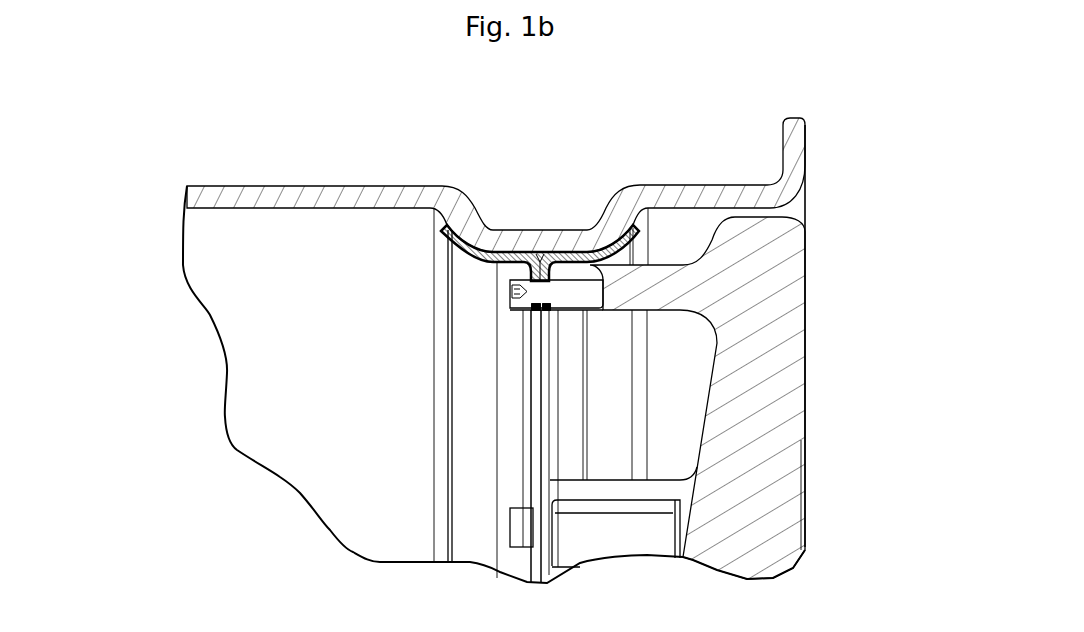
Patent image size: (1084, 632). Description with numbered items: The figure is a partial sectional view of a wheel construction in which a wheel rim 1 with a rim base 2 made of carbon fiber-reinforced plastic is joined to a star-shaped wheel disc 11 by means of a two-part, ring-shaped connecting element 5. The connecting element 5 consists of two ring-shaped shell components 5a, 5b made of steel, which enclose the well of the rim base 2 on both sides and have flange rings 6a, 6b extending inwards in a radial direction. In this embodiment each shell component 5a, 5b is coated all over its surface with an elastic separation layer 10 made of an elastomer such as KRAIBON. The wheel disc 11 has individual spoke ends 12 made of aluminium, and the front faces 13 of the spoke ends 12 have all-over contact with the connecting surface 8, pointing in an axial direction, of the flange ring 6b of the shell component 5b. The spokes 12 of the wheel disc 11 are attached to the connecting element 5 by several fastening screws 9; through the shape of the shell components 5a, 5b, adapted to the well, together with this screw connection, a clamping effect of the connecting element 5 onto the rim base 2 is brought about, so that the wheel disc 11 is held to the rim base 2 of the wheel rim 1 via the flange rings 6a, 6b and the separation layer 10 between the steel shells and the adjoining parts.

The wheel rim 1 is at (826, 113).
The rim base 2 is at (332, 186).
The connecting element 5 is at (499, 239).
The shell component 5a is at (445, 250).
The shell component 5b is at (637, 240).
The flange ring 6a is at (533, 307).
The flange ring 6b is at (548, 308).
The connecting surface 8 is at (548, 308).
The fastening screws 9 is at (510, 290).
The separation layer 10 is at (501, 252).
The wheel disc 11 is at (758, 393).
The spoke ends 12 is at (652, 523).
The front faces 13 is at (548, 308).